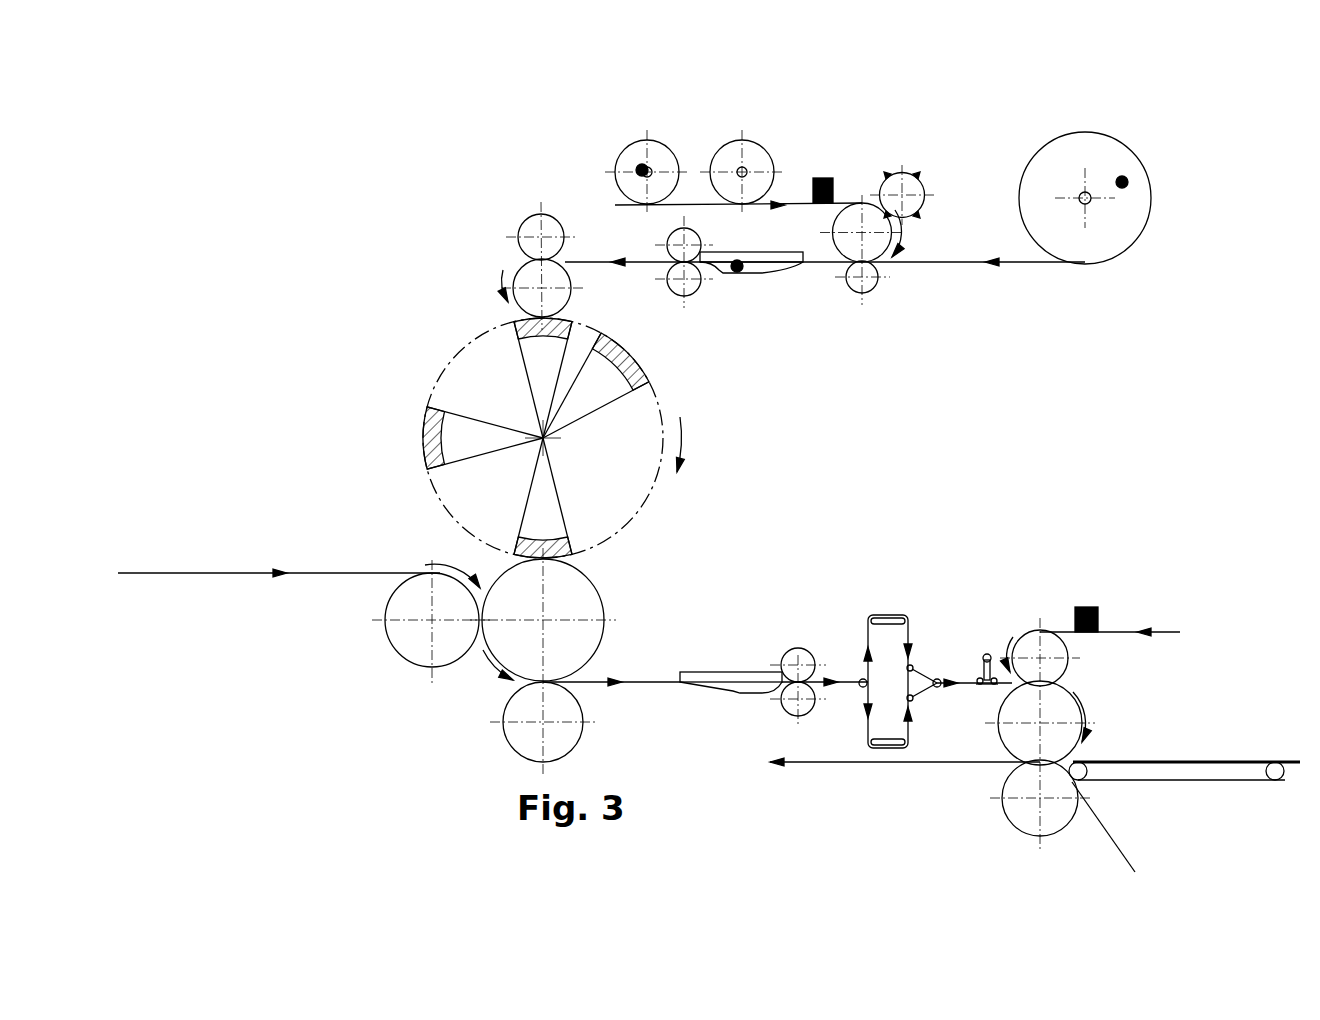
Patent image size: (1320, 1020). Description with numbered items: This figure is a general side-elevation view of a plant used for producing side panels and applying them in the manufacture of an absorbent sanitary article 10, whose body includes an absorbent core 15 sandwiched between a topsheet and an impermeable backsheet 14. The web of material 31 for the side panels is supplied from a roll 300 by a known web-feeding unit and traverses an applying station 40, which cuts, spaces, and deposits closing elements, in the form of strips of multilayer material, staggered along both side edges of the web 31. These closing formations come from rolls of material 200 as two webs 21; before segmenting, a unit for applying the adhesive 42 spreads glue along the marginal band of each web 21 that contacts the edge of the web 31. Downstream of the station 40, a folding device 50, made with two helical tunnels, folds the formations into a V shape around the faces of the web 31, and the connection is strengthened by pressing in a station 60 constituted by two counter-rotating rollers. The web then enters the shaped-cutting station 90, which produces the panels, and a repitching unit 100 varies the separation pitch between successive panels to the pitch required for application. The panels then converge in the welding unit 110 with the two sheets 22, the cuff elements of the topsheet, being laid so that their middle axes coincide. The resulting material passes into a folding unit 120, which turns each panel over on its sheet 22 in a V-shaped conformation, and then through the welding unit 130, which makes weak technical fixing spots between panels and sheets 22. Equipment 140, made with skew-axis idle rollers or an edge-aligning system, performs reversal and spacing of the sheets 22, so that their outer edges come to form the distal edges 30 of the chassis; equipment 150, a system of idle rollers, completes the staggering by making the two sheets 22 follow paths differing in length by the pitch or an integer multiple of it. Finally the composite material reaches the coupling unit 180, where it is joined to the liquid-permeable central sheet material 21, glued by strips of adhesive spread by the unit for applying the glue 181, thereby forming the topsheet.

The article 10 is at (755, 696).
The backsheet 14 is at (1163, 827).
The absorbent core 15 is at (1191, 748).
The web 21 is at (940, 347).
The sheet 22 is at (279, 520).
The distal edge 30 is at (520, 275).
The web of material 31 is at (842, 305).
The applying station 40 is at (766, 180).
The unit for applying the adhesive 42 is at (865, 129).
The folding device 50 is at (807, 328).
The station 60 is at (604, 227).
The shaped-cutting station 90 is at (447, 242).
The repitching unit 100 is at (471, 422).
The welding unit 110 is at (392, 664).
The folding unit 120 is at (712, 624).
The welding unit 130 is at (773, 607).
The equipment 140 is at (954, 627).
The equipment 150 is at (1014, 615).
The coupling unit 180 is at (1122, 734).
The unit for applying the glue 181 is at (1151, 548).
The rolls of material 200 is at (642, 142).
The roll 300 is at (1138, 177).